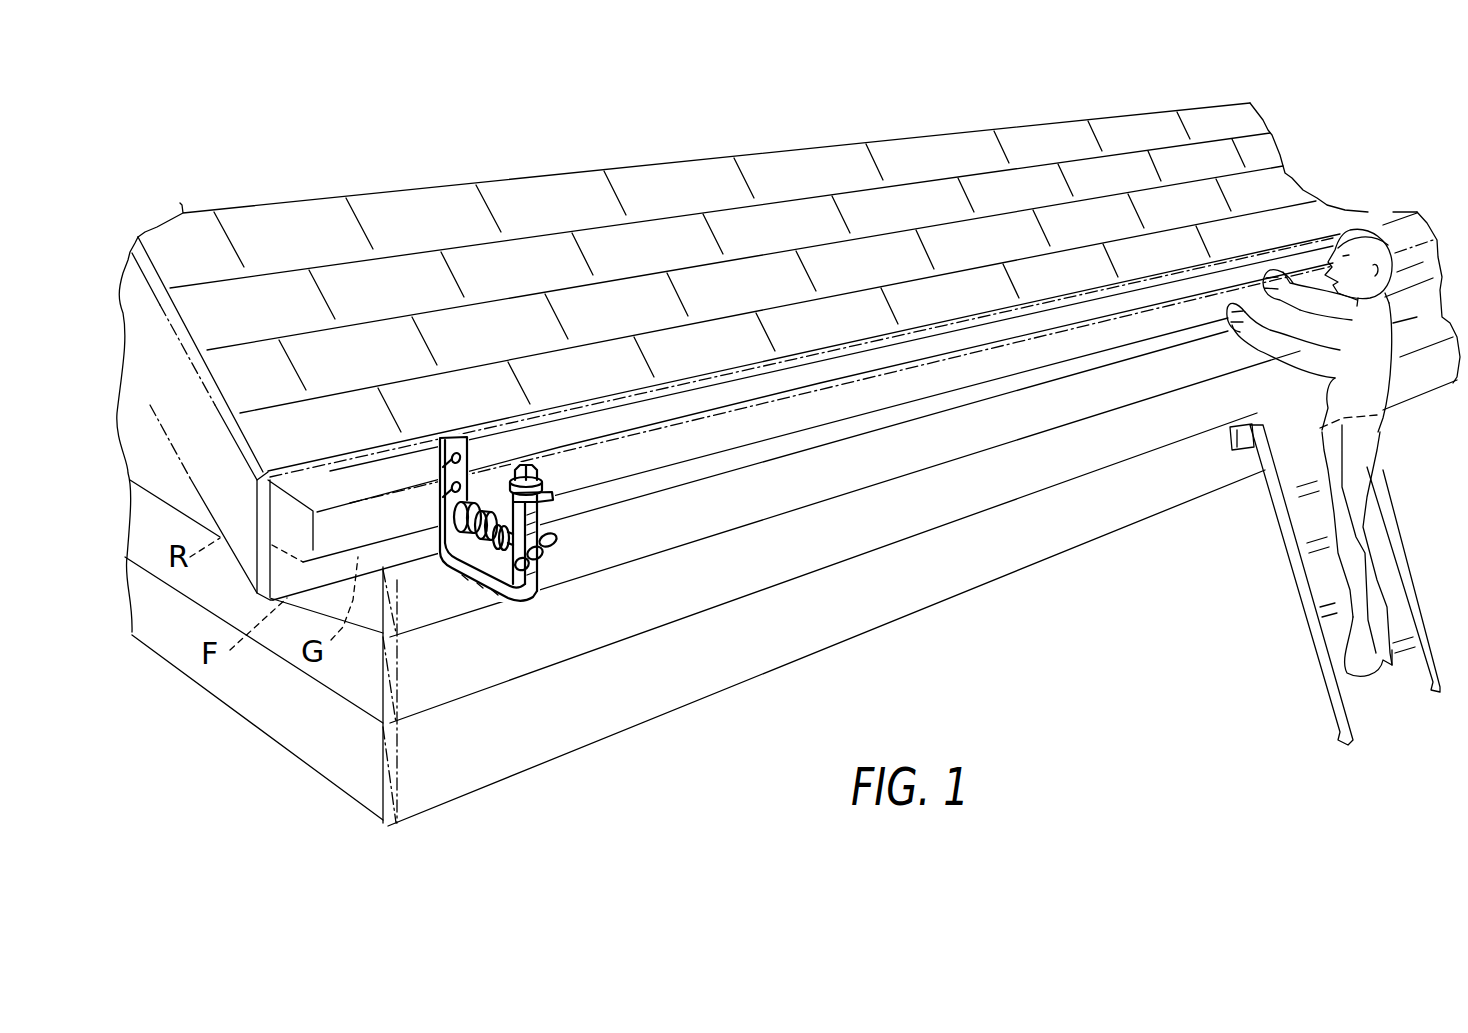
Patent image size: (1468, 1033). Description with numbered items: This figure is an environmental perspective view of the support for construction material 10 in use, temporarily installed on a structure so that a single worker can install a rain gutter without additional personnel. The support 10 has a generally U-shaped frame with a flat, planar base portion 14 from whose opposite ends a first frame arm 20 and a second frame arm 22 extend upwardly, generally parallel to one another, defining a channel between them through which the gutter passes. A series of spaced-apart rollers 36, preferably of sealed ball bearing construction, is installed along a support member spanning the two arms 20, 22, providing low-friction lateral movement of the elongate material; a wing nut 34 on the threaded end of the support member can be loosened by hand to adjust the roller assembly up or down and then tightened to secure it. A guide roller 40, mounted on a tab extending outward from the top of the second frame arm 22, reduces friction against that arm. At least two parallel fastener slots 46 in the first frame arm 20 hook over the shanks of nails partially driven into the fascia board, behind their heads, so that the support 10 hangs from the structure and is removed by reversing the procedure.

The support for construction material 10 is at (491, 645).
The base portion 14 is at (478, 576).
The first frame arm 20 is at (442, 519).
The second frame arm 22 is at (543, 573).
The wing nut 34 is at (553, 543).
The rollers 36 is at (490, 508).
The guide roller 40 is at (543, 483).
The fastener slots 46 is at (446, 494).